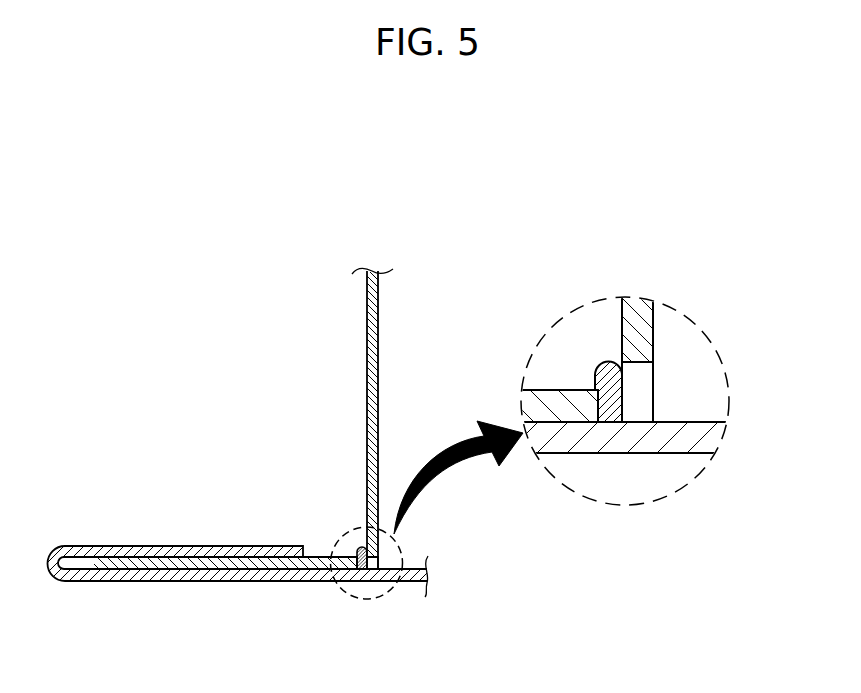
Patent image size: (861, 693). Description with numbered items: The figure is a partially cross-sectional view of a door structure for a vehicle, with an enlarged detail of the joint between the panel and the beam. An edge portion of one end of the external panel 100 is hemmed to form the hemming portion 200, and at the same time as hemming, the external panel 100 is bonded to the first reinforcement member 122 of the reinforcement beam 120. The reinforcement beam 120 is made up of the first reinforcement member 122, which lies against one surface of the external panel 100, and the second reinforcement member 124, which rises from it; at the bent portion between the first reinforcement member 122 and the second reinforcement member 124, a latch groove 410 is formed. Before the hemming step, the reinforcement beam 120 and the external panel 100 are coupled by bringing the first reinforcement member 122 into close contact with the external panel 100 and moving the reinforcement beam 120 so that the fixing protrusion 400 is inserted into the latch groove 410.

The external panel 100 is at (197, 577).
The hemming portion 200 is at (156, 548).
The reinforcement beam 120 is at (373, 389).
The first reinforcement member 122 is at (318, 557).
The second reinforcement member 124 is at (373, 490).
The fixing protrusion 400 is at (362, 572).
The latch groove 410 is at (372, 558).